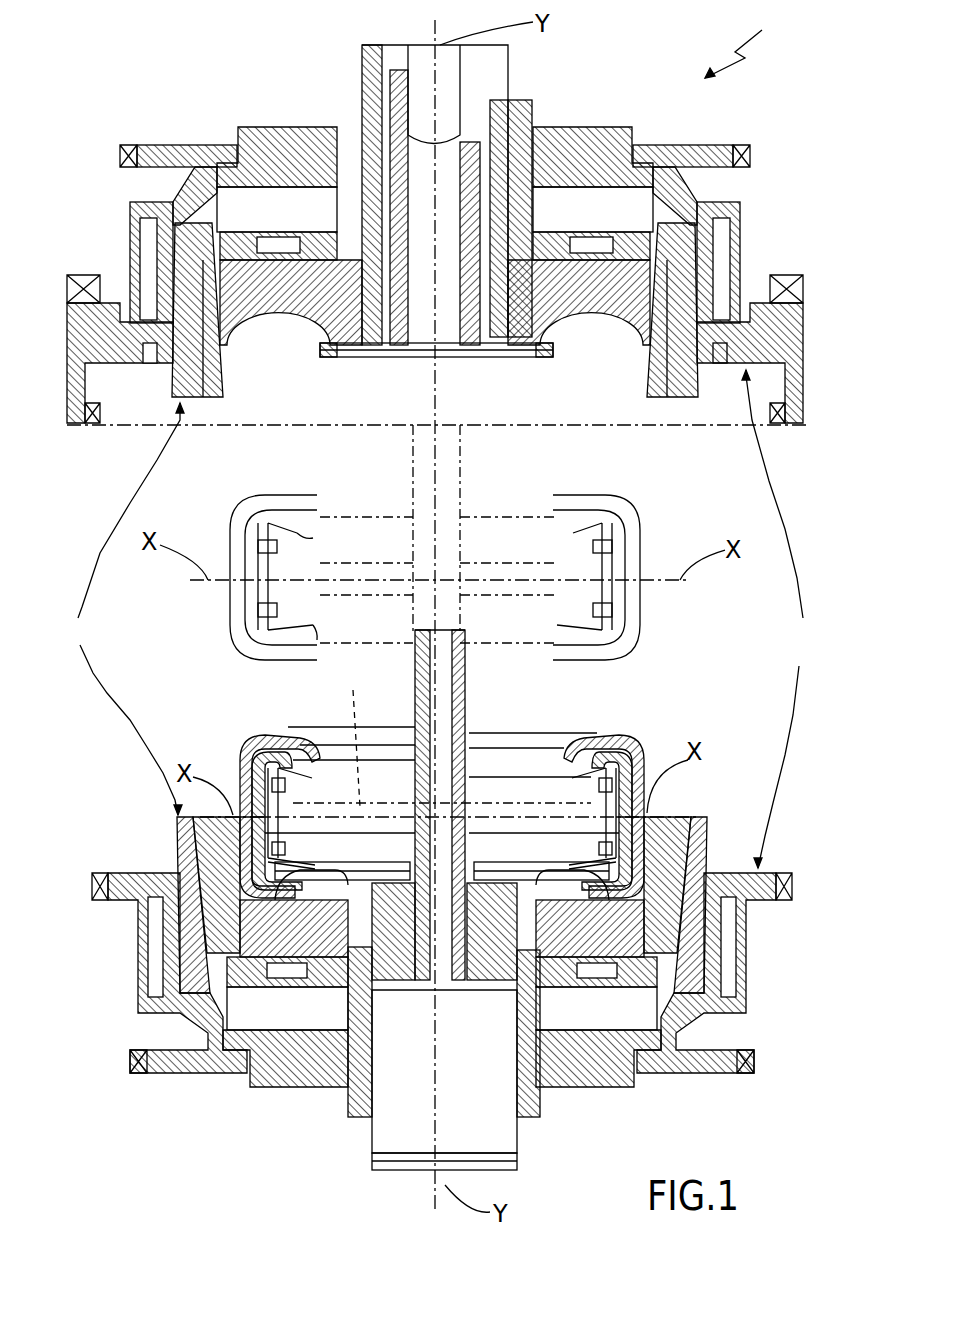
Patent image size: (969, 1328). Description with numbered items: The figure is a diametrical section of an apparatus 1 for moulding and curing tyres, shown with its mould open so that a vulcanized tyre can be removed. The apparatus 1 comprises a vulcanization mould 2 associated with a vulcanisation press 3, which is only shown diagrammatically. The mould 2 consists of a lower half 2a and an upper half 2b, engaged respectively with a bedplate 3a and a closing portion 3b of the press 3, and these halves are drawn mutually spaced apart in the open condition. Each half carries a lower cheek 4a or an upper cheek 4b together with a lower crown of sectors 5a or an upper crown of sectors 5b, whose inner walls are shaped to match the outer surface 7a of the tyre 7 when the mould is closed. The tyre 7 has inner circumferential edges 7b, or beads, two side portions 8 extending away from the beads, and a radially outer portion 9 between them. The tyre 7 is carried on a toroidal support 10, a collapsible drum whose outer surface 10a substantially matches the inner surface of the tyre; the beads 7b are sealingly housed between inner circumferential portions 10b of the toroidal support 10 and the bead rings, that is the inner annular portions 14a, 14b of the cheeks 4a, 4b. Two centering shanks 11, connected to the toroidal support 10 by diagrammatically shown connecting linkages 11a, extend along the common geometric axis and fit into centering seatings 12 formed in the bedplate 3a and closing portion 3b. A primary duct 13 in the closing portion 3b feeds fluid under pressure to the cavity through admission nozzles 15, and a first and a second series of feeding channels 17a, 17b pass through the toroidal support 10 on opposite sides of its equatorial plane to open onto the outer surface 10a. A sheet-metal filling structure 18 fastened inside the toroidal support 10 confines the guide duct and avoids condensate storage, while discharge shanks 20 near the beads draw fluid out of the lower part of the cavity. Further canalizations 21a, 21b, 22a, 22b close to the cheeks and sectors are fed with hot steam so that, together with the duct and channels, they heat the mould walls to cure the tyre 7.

The apparatus for moulding and curing tyres 1 is at (744, 42).
The vulcanization mould 2 is at (122, 609).
The vulcanisation press 3 is at (777, 619).
The lower half 2a is at (700, 812).
The upper half 2b is at (687, 403).
The bedplate 3a is at (755, 947).
The closing portion 3b is at (750, 212).
The lower cheek 4a is at (323, 930).
The upper cheek 4b is at (282, 270).
The lower crown of sectors 5a is at (672, 813).
The upper crown of sectors 5b is at (663, 405).
The tyre 7 is at (640, 530).
The outer surface 7a is at (632, 748).
The inner circumferential edges 7b is at (393, 760).
The side portions 8 is at (270, 497).
The radially outer portion 9 is at (240, 515).
The toroidal support 10 is at (300, 505).
The outer surface 10a is at (248, 612).
The inner circumferential portions 10b is at (540, 760).
The centering shank 11 is at (465, 637).
The connecting linkages 11a is at (360, 735).
The centering seating 12 is at (455, 350).
The primary duct 13 is at (385, 117).
The inner annular portion 14a is at (567, 957).
The inner annular portion 14b is at (590, 266).
The admission nozzles 15 is at (327, 360).
The feeding channels 17a is at (262, 750).
The feeding channels 17b is at (637, 855).
The filling structure 18 is at (277, 750).
The discharge shanks 20 is at (360, 865).
The canalizations 21a is at (277, 975).
The canalizations 21b is at (600, 248).
The canalizations 22a is at (733, 983).
The canalizations 22b is at (725, 265).